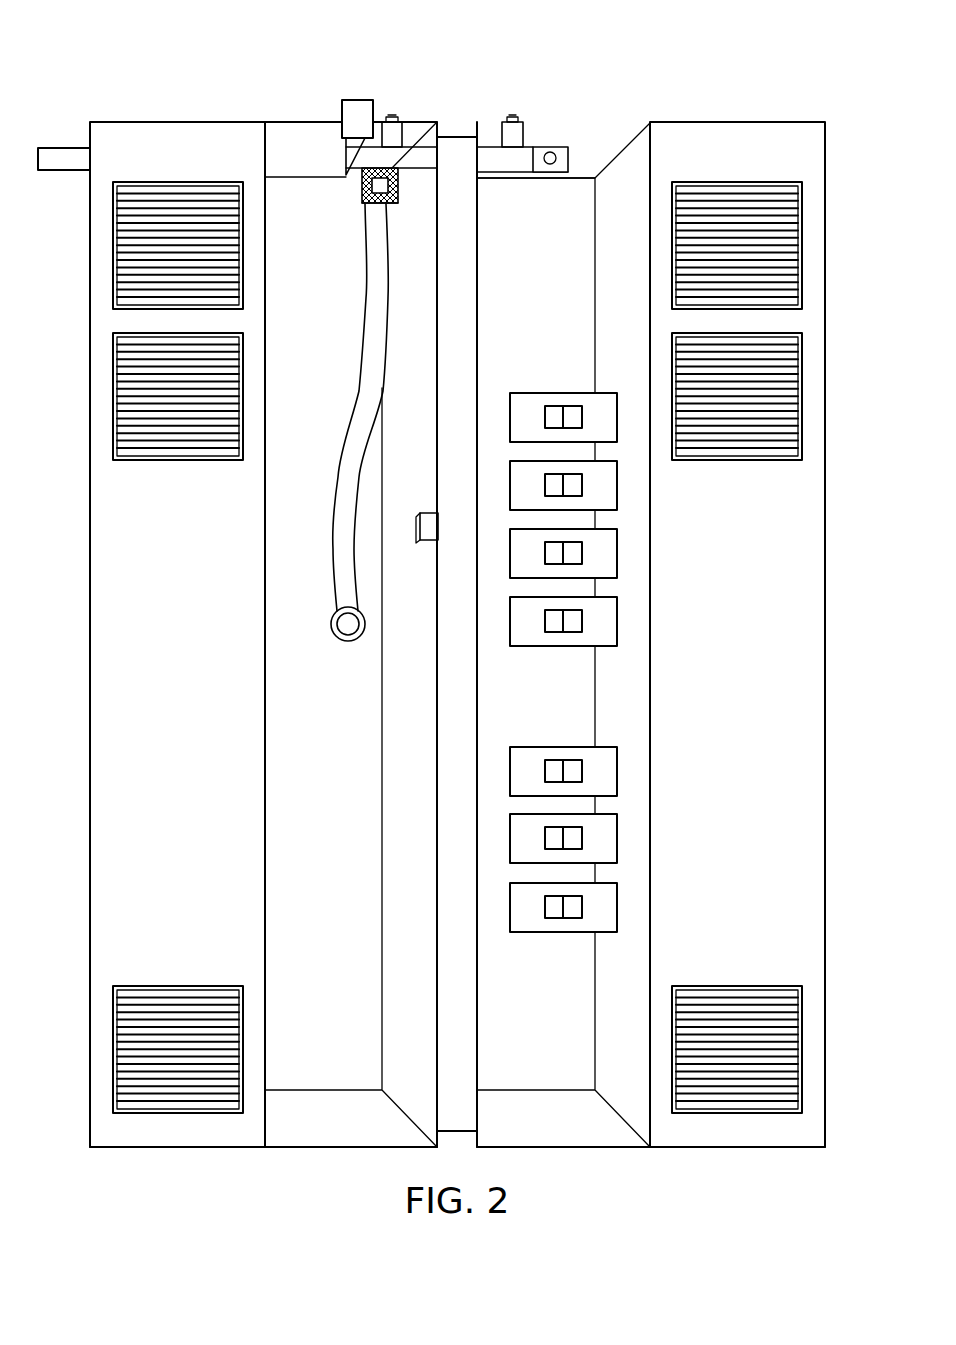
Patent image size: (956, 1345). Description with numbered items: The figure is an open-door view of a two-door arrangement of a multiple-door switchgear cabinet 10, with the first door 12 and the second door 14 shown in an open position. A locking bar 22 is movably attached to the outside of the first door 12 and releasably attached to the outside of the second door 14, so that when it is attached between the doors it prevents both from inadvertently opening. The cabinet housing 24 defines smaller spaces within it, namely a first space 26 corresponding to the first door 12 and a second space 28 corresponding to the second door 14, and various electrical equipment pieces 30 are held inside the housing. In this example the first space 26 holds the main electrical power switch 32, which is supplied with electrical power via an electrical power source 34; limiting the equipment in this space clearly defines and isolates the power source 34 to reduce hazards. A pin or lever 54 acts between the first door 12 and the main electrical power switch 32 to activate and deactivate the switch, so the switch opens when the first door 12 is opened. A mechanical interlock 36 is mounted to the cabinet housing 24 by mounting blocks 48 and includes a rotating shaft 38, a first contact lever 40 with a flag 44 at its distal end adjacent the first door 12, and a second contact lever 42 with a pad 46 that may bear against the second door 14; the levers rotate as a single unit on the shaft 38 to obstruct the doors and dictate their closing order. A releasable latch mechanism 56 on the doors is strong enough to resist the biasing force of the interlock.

The multiple-door switchgear cabinet 10 is at (183, 77).
The first door 12 is at (156, 624).
The second door 14 is at (723, 699).
The locking bar 22 is at (61, 157).
The cabinet housing 24 is at (348, 1125).
The first space 26 is at (338, 764).
The space 28 is at (579, 709).
The electrical equipment pieces 30 is at (617, 427).
The main electrical power switch 32 is at (363, 200).
The electrical power source 34 is at (377, 335).
The mechanical interlock 36 is at (587, 62).
The rotating shaft 38 is at (517, 179).
The first contact lever 40 is at (345, 157).
The second contact lever 42 is at (567, 147).
The flag 44 is at (353, 100).
The pad 46 is at (551, 151).
The mounting block 48 is at (493, 122).
The pin or lever 54 is at (399, 182).
The releasable latch mechanism 56 is at (430, 533).